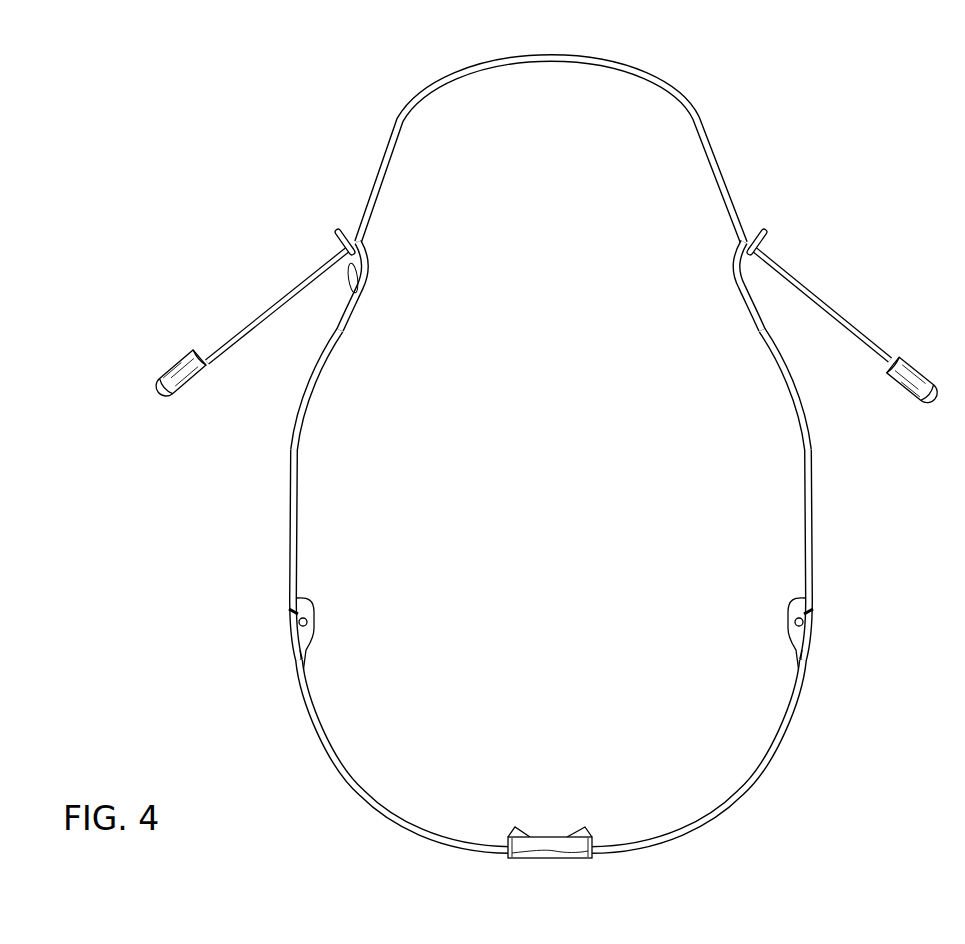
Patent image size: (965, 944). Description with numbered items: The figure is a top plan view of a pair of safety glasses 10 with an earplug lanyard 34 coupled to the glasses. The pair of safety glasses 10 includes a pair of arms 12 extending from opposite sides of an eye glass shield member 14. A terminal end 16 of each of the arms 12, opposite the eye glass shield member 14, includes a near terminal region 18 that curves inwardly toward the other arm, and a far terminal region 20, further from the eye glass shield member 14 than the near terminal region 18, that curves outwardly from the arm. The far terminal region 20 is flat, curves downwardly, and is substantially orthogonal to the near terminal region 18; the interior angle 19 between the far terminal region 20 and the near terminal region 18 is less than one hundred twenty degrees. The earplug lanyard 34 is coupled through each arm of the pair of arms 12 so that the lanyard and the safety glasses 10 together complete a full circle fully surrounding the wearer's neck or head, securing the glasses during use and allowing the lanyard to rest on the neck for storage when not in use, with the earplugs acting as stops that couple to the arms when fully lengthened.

The pair of safety glasses 10 is at (548, 458).
The pair of arms 12 is at (313, 515).
The eye glass shield member 14 is at (618, 780).
The terminal end 16 is at (270, 413).
The near terminal region 18 is at (367, 300).
The interior angle 19 is at (348, 277).
The far terminal region 20 is at (352, 258).
The earplug lanyard 34 is at (378, 142).